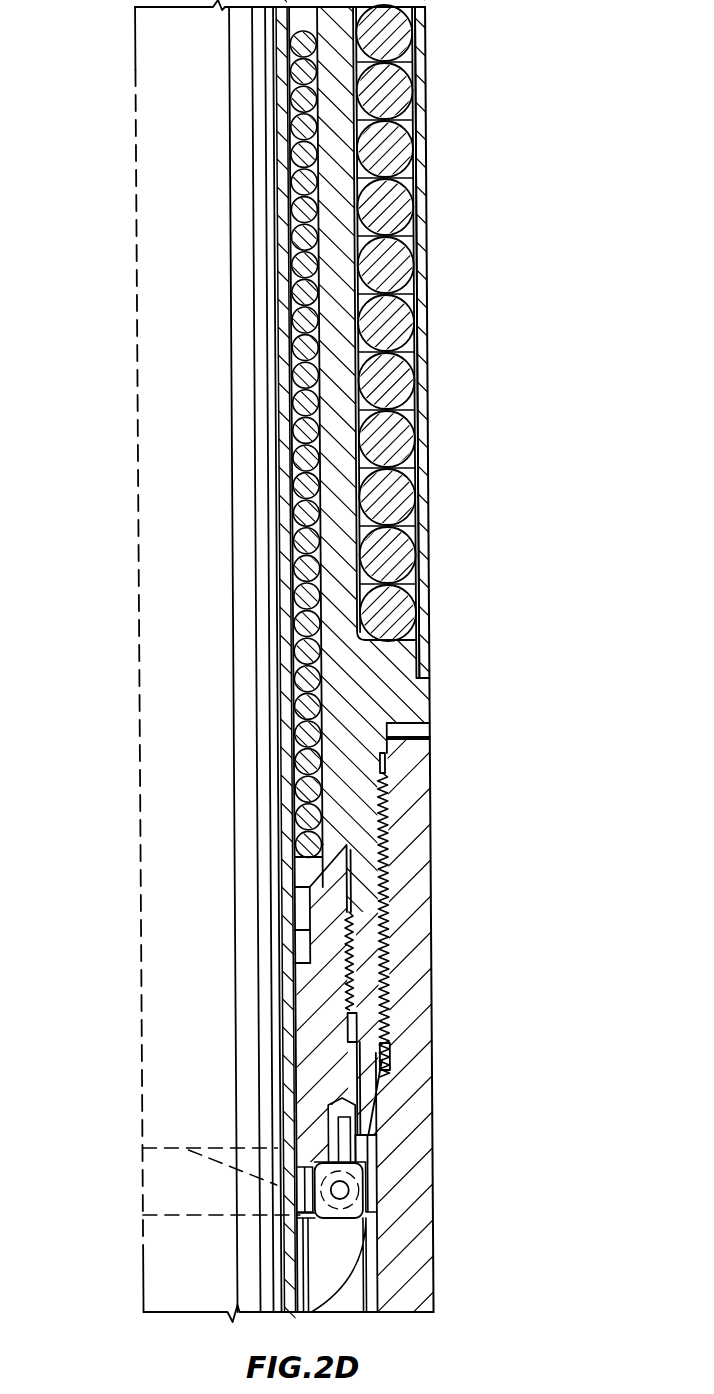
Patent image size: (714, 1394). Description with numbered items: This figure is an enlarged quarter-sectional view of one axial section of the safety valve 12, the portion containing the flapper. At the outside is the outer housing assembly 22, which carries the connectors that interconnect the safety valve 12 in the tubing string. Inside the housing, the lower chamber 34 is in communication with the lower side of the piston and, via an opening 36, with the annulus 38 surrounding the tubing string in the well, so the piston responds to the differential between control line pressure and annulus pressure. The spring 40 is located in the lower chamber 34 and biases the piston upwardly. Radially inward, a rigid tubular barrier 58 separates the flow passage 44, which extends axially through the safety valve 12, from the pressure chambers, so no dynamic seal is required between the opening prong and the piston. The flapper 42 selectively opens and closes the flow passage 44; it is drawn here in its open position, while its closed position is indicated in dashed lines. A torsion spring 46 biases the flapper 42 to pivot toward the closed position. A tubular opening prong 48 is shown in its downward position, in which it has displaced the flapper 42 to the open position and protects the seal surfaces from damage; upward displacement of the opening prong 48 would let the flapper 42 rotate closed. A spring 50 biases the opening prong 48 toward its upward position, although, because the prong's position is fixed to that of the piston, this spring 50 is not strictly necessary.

The safety valve 12 is at (575, 71).
The outer housing assembly 22 is at (430, 777).
The chamber 34 is at (403, 242).
The opening 36 is at (420, 598).
The annulus 38 is at (462, 448).
The spring 40 is at (413, 360).
The flapper 42 is at (166, 1216).
The flow passage 44 is at (178, 723).
The torsion spring 46 is at (375, 1157).
The tubular opening prong 48 is at (305, 935).
The spring 50 is at (320, 667).
The rigid tubular barrier 58 is at (412, 137).